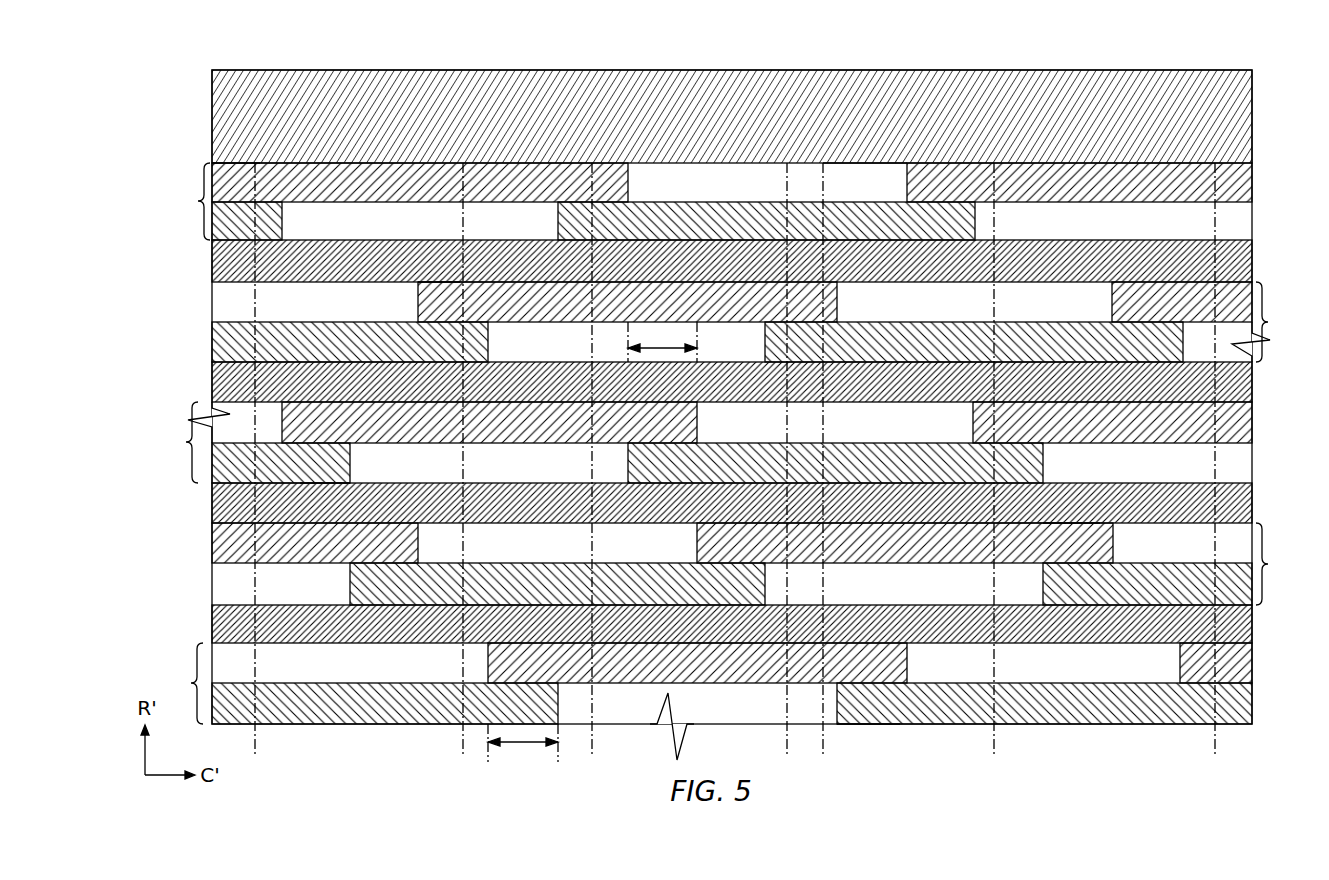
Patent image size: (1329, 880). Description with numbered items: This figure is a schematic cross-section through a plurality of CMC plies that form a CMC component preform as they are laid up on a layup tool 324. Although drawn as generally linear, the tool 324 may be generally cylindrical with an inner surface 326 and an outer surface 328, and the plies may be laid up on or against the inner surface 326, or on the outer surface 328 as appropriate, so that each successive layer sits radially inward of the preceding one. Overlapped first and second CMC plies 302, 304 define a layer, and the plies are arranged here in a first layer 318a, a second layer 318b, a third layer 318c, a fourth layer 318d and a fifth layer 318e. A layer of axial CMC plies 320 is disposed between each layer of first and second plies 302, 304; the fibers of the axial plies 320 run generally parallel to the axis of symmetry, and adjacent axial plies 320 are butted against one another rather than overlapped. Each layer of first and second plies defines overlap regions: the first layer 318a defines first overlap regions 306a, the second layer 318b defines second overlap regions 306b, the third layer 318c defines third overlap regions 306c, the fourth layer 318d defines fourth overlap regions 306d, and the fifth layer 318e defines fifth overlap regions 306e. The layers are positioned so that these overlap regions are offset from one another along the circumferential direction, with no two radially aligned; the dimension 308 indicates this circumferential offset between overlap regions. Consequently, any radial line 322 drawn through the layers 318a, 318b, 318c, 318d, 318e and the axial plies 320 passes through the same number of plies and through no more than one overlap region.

The first CMC ply 302 is at (618, 180).
The second CMC ply 304 is at (963, 221).
The first overlap region 306a is at (234, 161).
The second overlap region 306b is at (437, 281).
The third overlap region 306c is at (321, 486).
The fourth overlap region 306d is at (1072, 523).
The fifth overlap region 306e is at (875, 726).
The offset distance 308 is at (668, 348).
The first layer 318a is at (178, 201).
The second layer 318b is at (1288, 322).
The third layer 318c is at (166, 442).
The fourth layer 318d is at (1288, 564).
The fifth layer 318e is at (173, 683).
The axial CMC ply 320 is at (1243, 253).
The radial line 322 is at (735, 472).
The layup tool 324 is at (1050, 88).
The inner surface 326 is at (864, 180).
The outer surface 328 is at (665, 71).